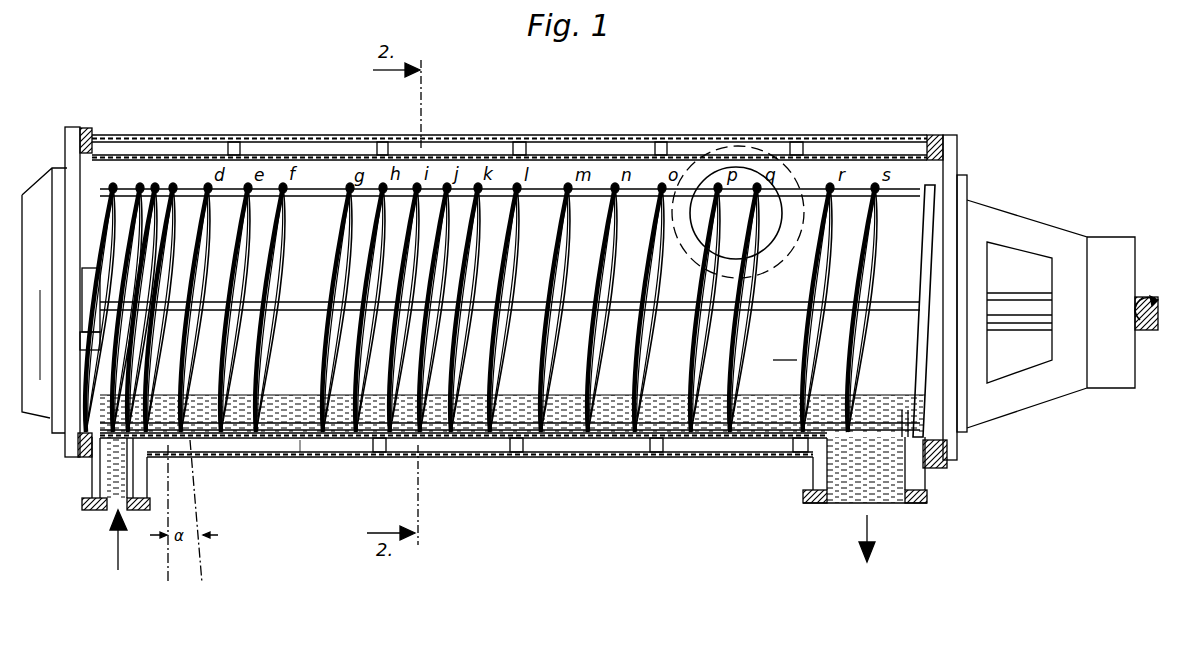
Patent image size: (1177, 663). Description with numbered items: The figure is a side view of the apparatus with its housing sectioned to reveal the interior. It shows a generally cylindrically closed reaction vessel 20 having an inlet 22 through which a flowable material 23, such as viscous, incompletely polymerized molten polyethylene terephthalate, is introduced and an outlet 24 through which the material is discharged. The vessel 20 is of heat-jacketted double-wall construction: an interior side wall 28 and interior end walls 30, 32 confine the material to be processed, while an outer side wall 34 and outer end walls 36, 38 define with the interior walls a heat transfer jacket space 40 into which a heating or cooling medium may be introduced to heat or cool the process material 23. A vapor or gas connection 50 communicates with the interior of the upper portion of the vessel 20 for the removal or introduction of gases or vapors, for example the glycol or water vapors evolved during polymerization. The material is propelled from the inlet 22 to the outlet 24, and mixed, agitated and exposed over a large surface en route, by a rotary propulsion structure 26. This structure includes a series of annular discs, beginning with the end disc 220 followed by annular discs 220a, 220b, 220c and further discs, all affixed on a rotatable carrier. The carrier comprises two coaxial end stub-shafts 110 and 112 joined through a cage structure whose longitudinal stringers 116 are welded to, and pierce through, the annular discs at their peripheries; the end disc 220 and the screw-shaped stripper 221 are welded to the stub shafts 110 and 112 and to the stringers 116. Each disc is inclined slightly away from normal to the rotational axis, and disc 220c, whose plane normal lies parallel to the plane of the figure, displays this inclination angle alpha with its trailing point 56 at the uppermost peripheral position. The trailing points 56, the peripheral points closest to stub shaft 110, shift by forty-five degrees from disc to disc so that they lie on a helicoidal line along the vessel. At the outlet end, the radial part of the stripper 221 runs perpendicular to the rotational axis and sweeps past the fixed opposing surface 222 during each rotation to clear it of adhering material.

The reaction vessel 20 is at (640, 170).
The inlet 22 is at (115, 508).
The flowable material 23 is at (300, 446).
The outlet 24 is at (873, 490).
The rotary propulsion structure 26 is at (785, 349).
The interior side wall 28 is at (316, 155).
The interior end wall 30 is at (72, 142).
The interior end wall 32 is at (948, 148).
The outer side wall 34 is at (552, 137).
The outer end wall 36 is at (960, 186).
The outer end wall 38 is at (68, 450).
The heat transfer jacket space 40 is at (245, 145).
The vapor or gas connection 50 is at (752, 176).
The trailing points 56 is at (203, 228).
The end stub-shaft 110 is at (86, 262).
The end stub-shaft 112 is at (1013, 305).
The longitudinal stringers 116 is at (495, 189).
The end disc 220 is at (113, 182).
The annular disc 220a is at (140, 182).
The annular disc 220b is at (155, 182).
The annular disc 220c is at (173, 182).
The stripper 221 is at (932, 187).
The fixed opposing surface 222 is at (937, 438).